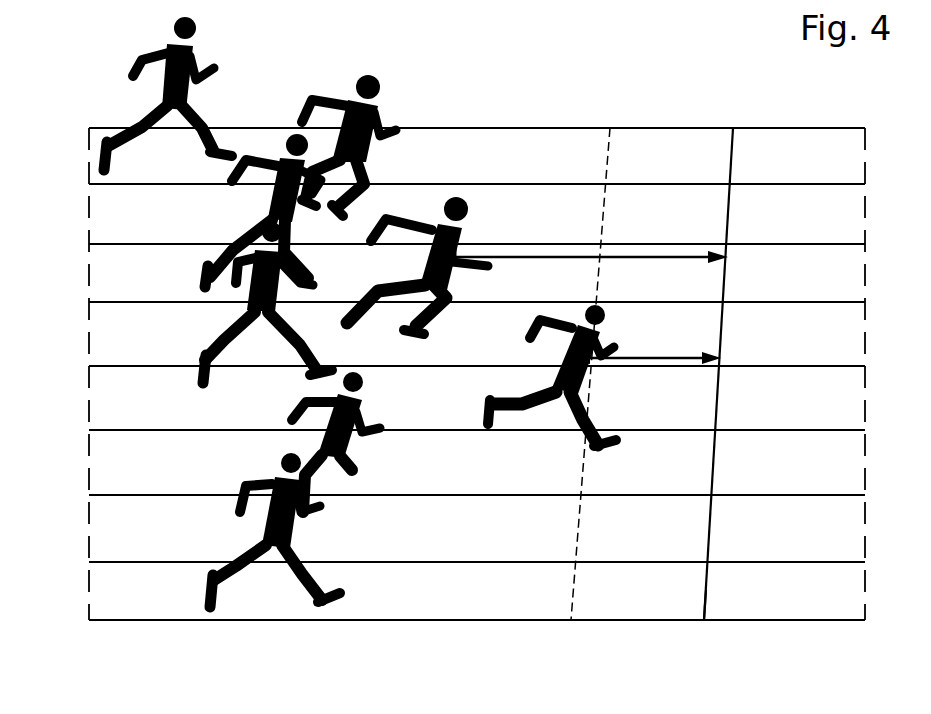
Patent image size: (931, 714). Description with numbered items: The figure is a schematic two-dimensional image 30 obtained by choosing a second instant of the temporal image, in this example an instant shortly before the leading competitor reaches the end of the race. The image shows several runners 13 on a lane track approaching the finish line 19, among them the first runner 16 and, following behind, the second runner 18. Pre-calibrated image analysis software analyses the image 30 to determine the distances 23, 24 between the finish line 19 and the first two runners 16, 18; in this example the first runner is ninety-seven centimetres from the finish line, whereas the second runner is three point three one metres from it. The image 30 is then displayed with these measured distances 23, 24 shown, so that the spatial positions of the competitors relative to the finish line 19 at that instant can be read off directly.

The two-dimensional image 30 is at (86, 84).
The runners 13 is at (250, 195).
The second runner 18 is at (468, 205).
The first runner 16 is at (500, 420).
The distance 24 is at (554, 262).
The distance 23 is at (686, 305).
The finish line 19 is at (707, 596).